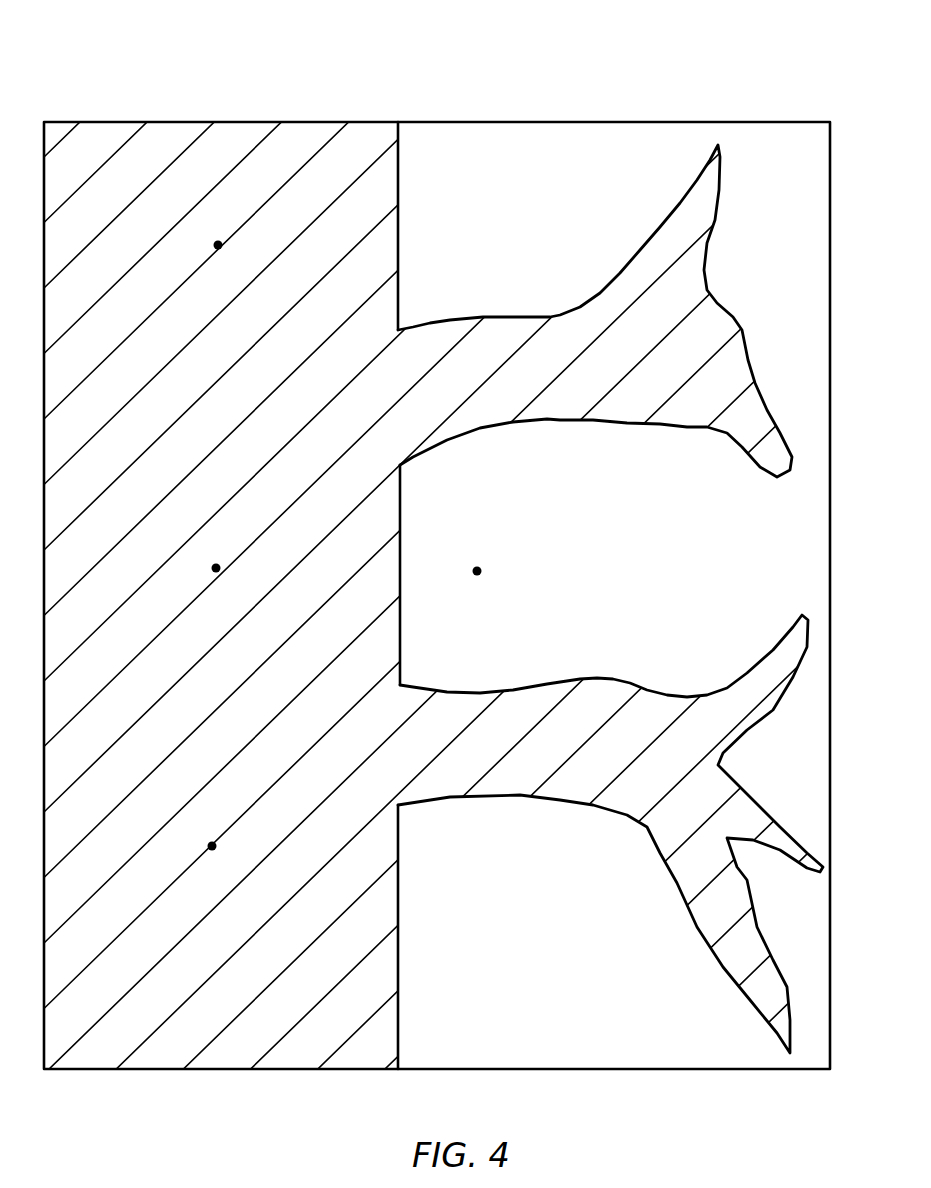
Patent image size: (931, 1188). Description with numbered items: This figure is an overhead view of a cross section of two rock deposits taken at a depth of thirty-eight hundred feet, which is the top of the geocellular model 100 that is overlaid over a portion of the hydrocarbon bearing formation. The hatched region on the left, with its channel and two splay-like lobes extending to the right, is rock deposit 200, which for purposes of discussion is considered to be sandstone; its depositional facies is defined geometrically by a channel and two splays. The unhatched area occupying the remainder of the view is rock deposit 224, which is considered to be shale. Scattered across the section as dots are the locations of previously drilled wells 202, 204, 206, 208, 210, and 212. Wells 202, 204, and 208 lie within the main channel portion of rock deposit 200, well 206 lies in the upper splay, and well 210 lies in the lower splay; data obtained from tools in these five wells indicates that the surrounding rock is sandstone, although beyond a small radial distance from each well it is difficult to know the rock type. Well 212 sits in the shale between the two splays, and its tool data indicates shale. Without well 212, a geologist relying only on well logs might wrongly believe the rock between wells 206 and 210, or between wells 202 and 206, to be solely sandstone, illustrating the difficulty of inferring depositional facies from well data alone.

The geocellular model 100 is at (697, 90).
The rock deposit 200 is at (190, 432).
The wellbore 202 is at (218, 245).
The wellbore 204 is at (216, 568).
The wellbore 206 is at (601, 371).
The wellbore 208 is at (212, 846).
The wellbore 210 is at (602, 749).
The wellbore 212 is at (477, 571).
The rock deposit 224 is at (729, 570).